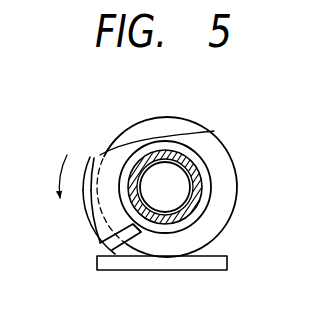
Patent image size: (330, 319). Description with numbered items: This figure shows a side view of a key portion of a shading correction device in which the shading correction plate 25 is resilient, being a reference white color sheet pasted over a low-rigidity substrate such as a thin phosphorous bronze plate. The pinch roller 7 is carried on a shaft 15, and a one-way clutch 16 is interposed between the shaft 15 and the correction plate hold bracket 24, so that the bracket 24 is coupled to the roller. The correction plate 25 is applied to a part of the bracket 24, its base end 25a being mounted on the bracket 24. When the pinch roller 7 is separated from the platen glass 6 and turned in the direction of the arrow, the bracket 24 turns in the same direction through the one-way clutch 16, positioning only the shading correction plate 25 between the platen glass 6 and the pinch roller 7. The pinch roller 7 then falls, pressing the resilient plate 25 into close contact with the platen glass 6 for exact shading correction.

The platen glass 6 is at (208, 263).
The pinch roller 7 is at (226, 191).
The shaft 15 is at (196, 166).
The one-way clutch 16 is at (185, 185).
The correction plate hold bracket 24 is at (90, 152).
The base end 25a is at (80, 221).
The shading correction plate 25 is at (98, 249).